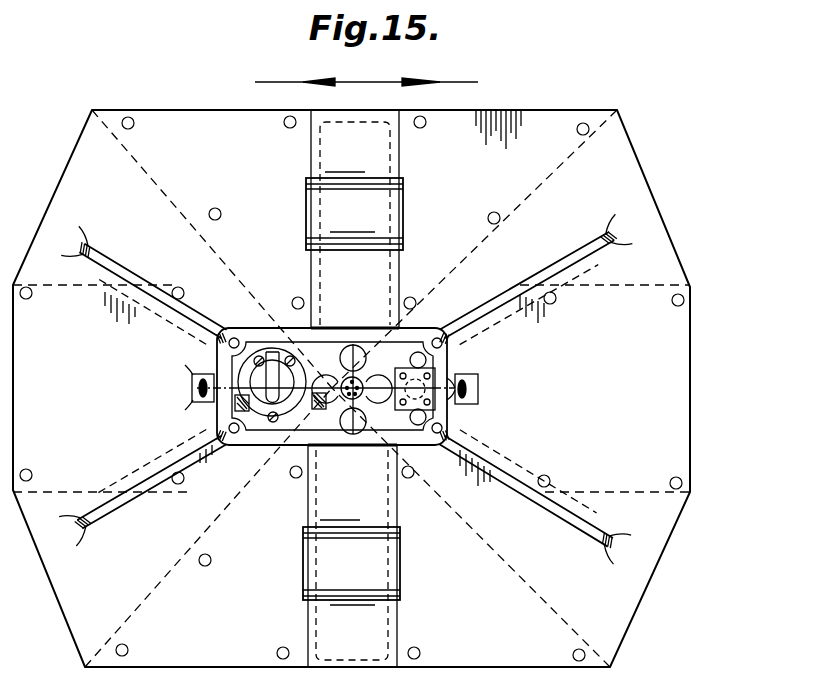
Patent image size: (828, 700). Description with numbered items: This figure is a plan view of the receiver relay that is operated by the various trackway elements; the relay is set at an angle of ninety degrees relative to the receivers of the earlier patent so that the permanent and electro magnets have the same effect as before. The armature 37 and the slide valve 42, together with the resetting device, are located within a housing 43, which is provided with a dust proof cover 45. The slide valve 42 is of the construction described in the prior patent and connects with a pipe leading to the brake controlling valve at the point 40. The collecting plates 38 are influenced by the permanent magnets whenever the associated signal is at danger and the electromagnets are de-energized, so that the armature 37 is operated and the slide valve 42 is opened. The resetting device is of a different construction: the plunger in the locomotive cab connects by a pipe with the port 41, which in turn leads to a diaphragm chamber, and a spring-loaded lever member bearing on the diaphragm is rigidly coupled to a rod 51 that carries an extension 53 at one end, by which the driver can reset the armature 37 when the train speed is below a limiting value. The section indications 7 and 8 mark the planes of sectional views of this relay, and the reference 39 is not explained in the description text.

The section line 7- 7 is at (197, 388).
The section line 8- 8 is at (312, 285).
The armature 37 is at (368, 346).
The collecting plates 38 is at (534, 128).
The hidden frame edge 39 is at (43, 494).
The point 40 is at (268, 354).
The port 41 is at (198, 405).
The slide valve 42 is at (425, 338).
The housing 43 is at (646, 215).
The dust proof cover 45 is at (438, 440).
The rod 51 is at (278, 425).
The extension 53 is at (317, 440).